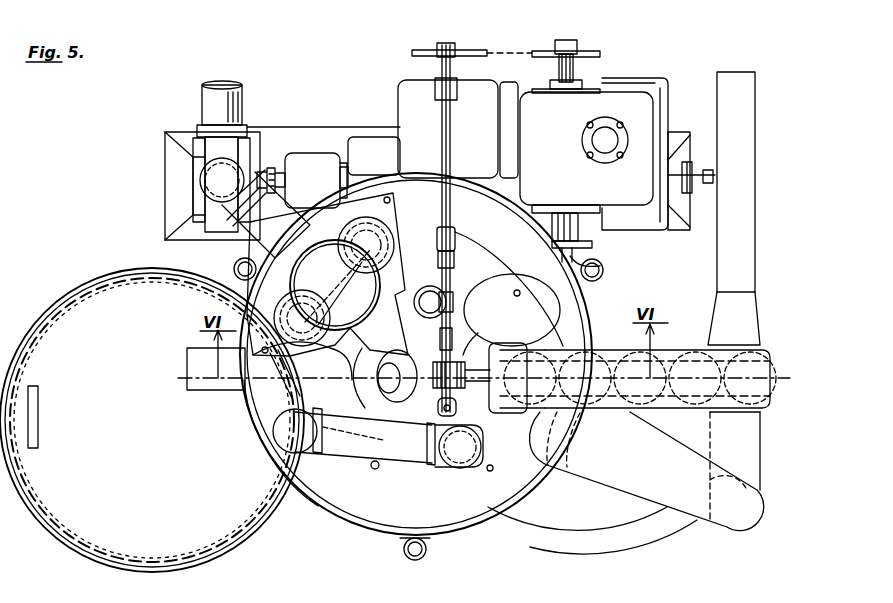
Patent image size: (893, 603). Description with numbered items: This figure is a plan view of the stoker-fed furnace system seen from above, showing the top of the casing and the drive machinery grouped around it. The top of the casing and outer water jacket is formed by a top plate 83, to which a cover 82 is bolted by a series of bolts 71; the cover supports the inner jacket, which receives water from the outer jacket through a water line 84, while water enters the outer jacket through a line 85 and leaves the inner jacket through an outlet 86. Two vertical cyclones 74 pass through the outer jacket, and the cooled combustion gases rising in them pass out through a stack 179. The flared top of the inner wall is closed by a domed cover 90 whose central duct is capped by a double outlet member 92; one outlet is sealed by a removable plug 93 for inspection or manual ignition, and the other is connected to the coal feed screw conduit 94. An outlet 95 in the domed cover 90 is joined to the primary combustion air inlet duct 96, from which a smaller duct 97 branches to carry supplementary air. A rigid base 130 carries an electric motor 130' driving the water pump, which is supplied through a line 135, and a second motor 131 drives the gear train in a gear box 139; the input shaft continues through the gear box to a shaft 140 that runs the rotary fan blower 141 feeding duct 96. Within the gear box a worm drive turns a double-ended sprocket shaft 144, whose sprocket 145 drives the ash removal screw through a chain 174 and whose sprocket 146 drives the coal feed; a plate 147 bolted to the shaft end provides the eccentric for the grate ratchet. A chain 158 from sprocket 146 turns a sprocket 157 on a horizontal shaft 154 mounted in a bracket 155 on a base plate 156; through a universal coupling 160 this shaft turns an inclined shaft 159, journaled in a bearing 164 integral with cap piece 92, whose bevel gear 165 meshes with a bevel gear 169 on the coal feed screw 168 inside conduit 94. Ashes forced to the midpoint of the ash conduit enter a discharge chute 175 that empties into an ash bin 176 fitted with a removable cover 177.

The bolt 71 is at (235, 264).
The vertical cyclones 74 is at (334, 281).
The cover 82 is at (476, 258).
The top plate 83 is at (320, 508).
The water line 84 is at (355, 447).
The line 85 is at (195, 191).
The outlet 86 is at (424, 316).
The domed cover 90 is at (553, 316).
The double outlet member 92 is at (508, 286).
The plug 93 is at (380, 390).
The coal feed screw conduit 94 is at (660, 410).
The outlet 95 is at (500, 452).
The primary combustion air inlet duct 96 is at (603, 476).
The smaller duct 97 is at (618, 556).
The rigid base 130 is at (186, 186).
The electric motor 130' is at (302, 158).
The second motor 131 is at (376, 136).
The line 135 is at (228, 98).
The gear box 139 is at (630, 98).
The shaft 140 is at (705, 165).
The rotary fan blower 141 is at (738, 82).
The double-ended sprocket shaft 144 is at (555, 78).
The sprocket 145 is at (588, 246).
The sprocket 146 is at (580, 50).
The plate 147 is at (606, 266).
The horizontal shaft 154 is at (450, 130).
The bracket 155 is at (441, 168).
The base plate 156 is at (427, 86).
The sprocket 157 is at (440, 55).
The chain 158 is at (500, 54).
The inclined shaft 159 is at (395, 282).
The universal coupling 160 is at (452, 238).
The bearing 164 is at (460, 356).
The bevel gear 165 is at (395, 425).
The coal feed screw 168 is at (608, 348).
The bevel gear 169 is at (480, 358).
The chain 174 is at (580, 218).
The discharge chute 175 is at (205, 375).
The ash bin 176 is at (82, 552).
The removable cover 177 is at (146, 290).
The stack 179 is at (320, 348).